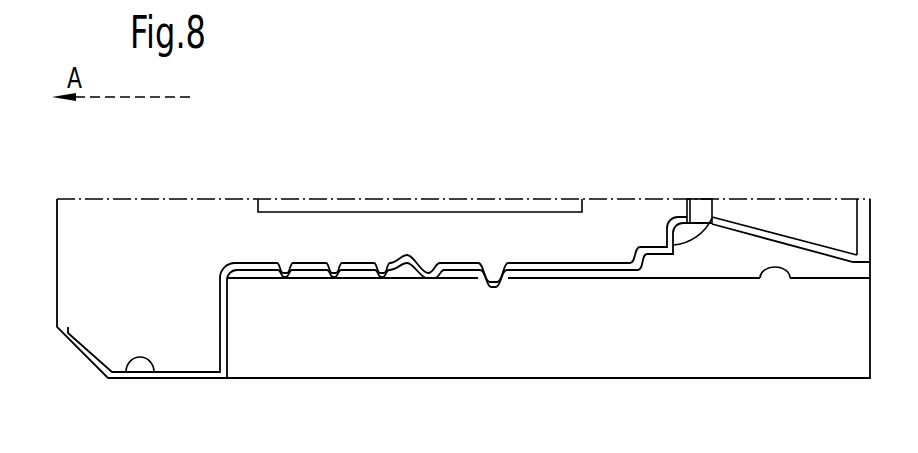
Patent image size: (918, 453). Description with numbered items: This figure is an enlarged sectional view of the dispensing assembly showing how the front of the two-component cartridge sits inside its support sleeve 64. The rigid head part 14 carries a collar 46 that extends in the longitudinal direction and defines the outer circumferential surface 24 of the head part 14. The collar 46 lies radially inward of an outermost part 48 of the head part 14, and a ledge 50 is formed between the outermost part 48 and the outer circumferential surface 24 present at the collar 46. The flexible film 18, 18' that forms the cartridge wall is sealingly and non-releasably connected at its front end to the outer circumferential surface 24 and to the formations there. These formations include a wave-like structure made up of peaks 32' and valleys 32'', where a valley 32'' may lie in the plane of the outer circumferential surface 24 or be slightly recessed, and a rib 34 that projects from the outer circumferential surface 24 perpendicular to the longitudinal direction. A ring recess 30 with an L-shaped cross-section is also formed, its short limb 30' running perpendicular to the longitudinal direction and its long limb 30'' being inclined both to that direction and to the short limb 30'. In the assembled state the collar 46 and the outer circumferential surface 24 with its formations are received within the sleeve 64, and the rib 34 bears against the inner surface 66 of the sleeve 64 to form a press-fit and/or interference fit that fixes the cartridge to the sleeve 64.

The head part 14 is at (187, 216).
The film 18 is at (656, 198).
The film 18' is at (656, 198).
The outer circumferential surface 24 is at (554, 204).
The collar 46 is at (495, 270).
The ring recess 30 is at (697, 175).
The short limb 30' is at (720, 186).
The long limb 30'' is at (791, 194).
The peaks 32' is at (333, 202).
The valleys 32'' is at (419, 202).
The rib 34 is at (495, 288).
The outermost part 48 is at (131, 370).
The ledge 50 is at (221, 312).
The sleeve 64 is at (585, 337).
The inner surface 66 is at (762, 282).